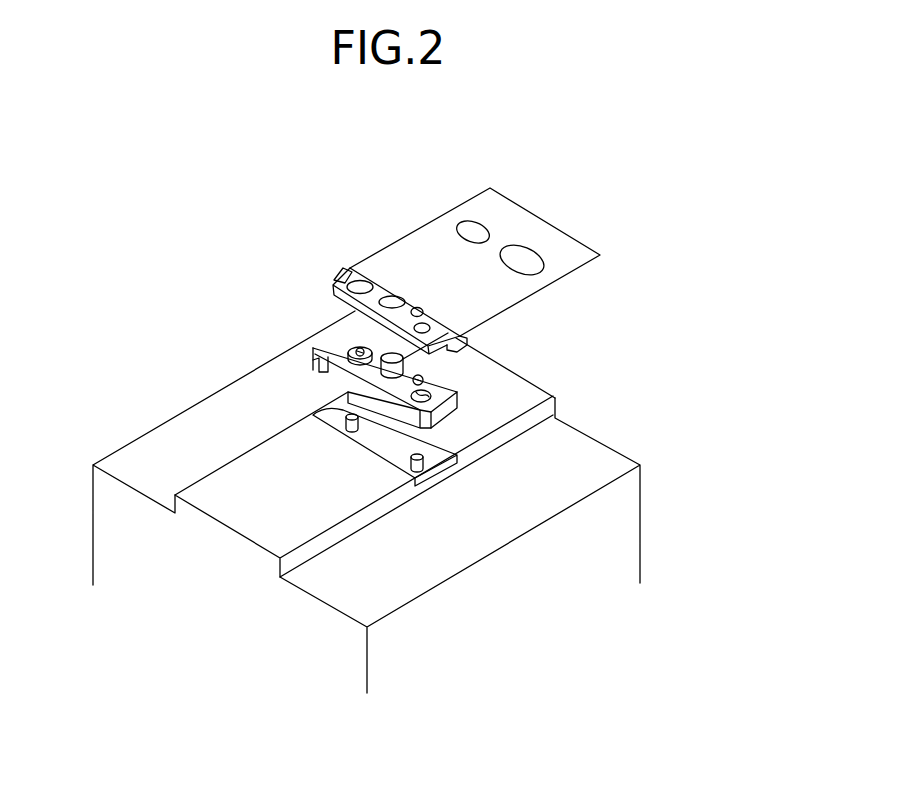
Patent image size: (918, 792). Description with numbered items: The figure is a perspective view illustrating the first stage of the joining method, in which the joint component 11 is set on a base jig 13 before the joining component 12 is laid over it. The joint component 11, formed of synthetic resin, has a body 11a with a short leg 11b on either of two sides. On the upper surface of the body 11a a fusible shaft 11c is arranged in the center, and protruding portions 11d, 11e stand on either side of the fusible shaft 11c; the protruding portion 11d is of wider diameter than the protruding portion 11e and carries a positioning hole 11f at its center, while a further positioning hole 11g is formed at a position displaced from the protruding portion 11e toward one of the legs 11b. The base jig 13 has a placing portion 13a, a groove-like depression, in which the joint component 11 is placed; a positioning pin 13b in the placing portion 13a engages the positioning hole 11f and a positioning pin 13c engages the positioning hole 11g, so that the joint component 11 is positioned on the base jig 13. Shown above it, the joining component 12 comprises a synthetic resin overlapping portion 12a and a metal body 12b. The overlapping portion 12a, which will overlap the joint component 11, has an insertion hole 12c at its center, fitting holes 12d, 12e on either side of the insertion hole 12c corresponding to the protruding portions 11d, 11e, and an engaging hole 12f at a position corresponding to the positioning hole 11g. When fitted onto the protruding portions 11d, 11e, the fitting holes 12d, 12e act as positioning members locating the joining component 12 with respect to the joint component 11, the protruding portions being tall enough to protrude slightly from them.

The joint component 11 is at (388, 377).
The body 11a is at (345, 345).
The short leg 11b is at (313, 355).
The fusible shaft 11c is at (346, 394).
The protruding portion 11d is at (348, 355).
The protruding portion 11e is at (422, 377).
The positioning hole 11f is at (316, 350).
The positioning hole 11g is at (426, 400).
The joining component 12 is at (441, 230).
The overlapping portion 12a is at (409, 302).
The body 12b is at (533, 227).
The insertion hole 12c is at (388, 293).
The fitting hole 12d is at (345, 267).
The fitting hole 12e is at (421, 306).
The engaging hole 12f is at (428, 327).
The base jig 13 is at (352, 502).
The placing portion 13a is at (365, 450).
The positioning pin 13b is at (312, 416).
The positioning pin 13c is at (421, 471).